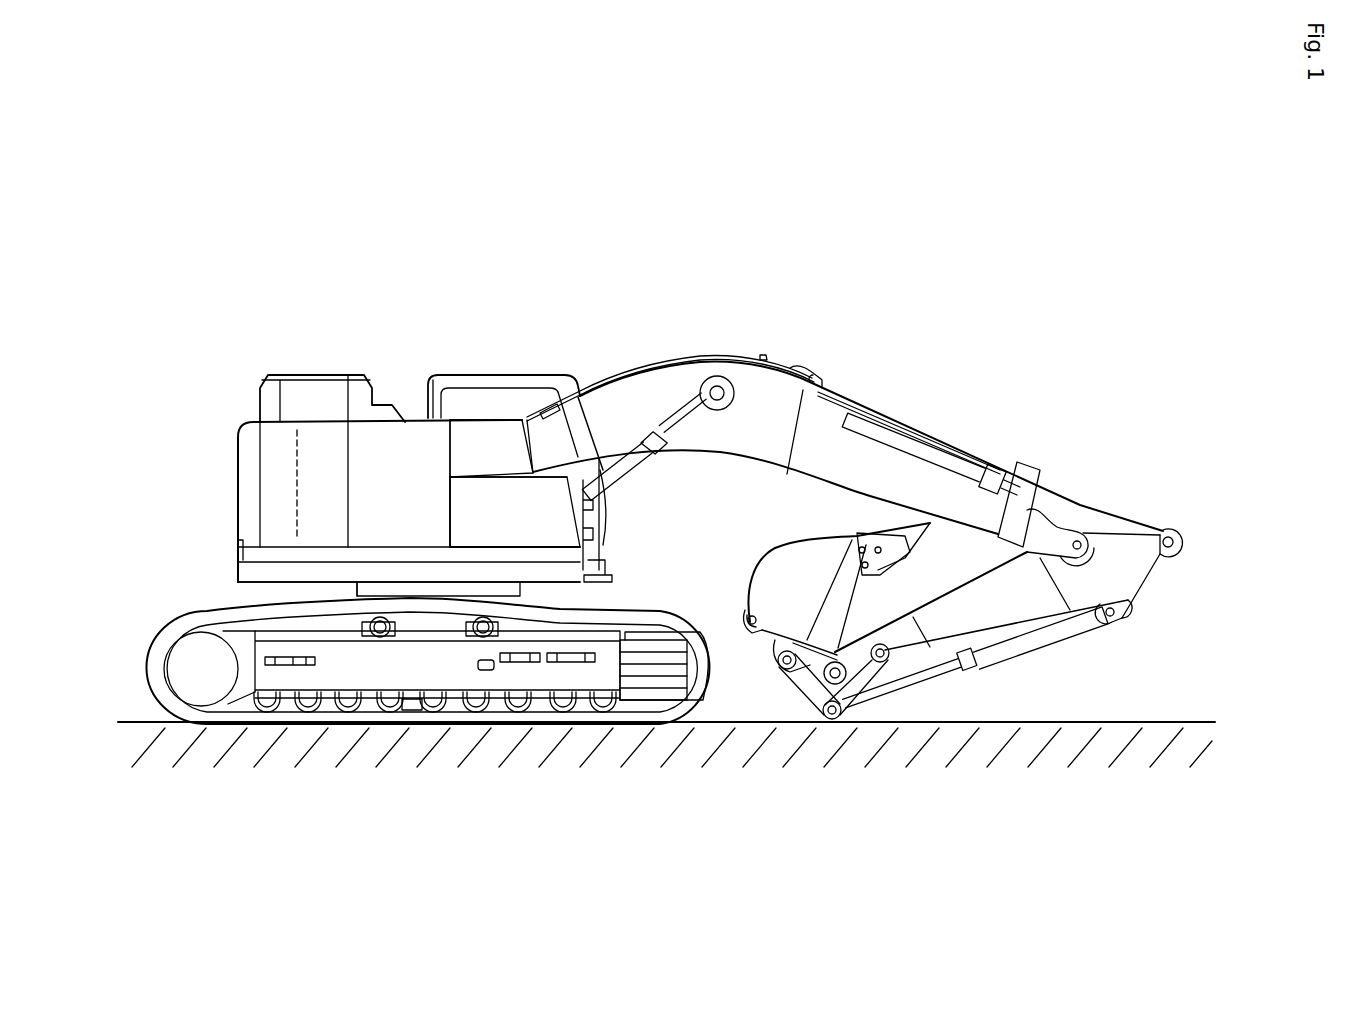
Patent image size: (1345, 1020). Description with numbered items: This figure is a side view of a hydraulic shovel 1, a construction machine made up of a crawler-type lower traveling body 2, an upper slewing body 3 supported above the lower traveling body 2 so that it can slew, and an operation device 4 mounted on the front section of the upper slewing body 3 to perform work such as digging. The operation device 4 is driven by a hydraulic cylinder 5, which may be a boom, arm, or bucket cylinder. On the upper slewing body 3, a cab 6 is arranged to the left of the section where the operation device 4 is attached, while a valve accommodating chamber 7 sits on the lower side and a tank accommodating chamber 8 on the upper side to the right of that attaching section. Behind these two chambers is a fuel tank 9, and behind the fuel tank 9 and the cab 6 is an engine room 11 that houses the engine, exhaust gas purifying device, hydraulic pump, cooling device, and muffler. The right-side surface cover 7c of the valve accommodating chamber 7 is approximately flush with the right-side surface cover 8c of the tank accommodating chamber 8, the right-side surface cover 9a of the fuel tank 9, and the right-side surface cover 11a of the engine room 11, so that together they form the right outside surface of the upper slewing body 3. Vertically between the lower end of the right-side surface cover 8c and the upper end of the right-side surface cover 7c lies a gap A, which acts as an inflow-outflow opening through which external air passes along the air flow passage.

The hydraulic shovel 1 is at (268, 312).
The lower traveling body 2 is at (518, 710).
The upper slewing body 3 is at (237, 470).
The operation device 4 is at (885, 398).
The hydraulic cylinder for operation device 5 is at (945, 443).
The cab 6 is at (495, 400).
The valve accommodating chamber 7 is at (548, 514).
The right-side surface cover 7c is at (513, 523).
The tank accommodating chamber 8 is at (501, 437).
The right-side surface cover 8c is at (480, 432).
The fuel tank 9 is at (415, 418).
The right-side surface cover 9a is at (390, 518).
The engine room 11 is at (272, 430).
The right-side surface cover 11a is at (270, 512).
The gap A is at (477, 484).